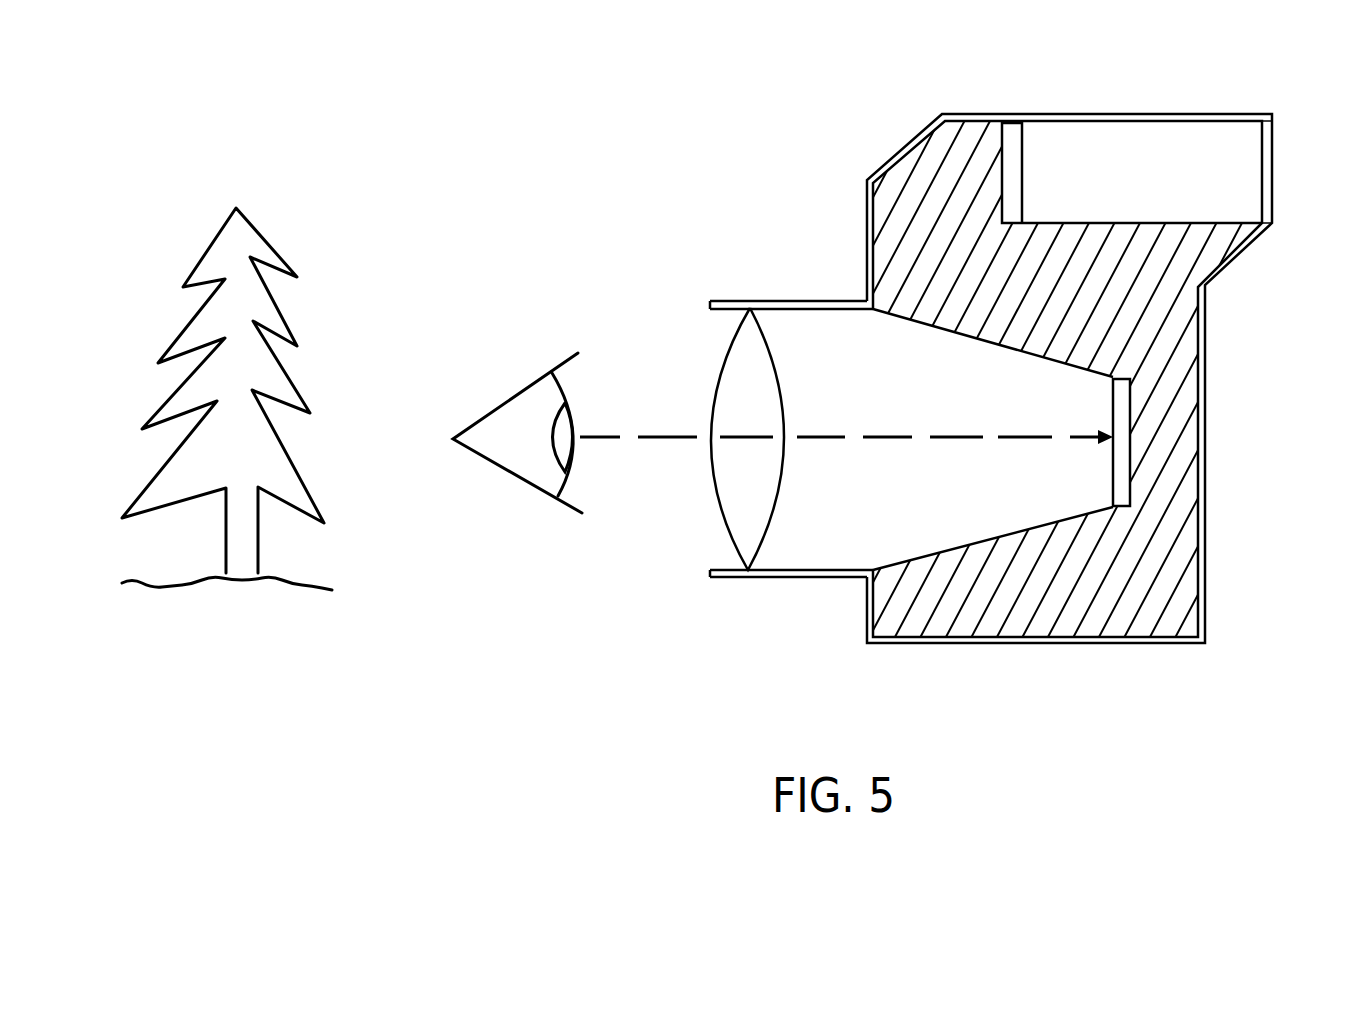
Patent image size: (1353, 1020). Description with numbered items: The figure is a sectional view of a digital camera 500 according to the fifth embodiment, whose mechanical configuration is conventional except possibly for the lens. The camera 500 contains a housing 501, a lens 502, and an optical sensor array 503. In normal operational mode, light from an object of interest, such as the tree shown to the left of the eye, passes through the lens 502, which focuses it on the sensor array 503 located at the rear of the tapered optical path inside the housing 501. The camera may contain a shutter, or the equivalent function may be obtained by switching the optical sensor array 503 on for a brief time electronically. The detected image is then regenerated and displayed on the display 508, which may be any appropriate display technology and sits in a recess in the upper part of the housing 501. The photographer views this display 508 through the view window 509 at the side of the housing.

The camera 500 is at (758, 131).
The housing 501 is at (1205, 601).
The lens 502 is at (722, 517).
The optical sensor array 503 is at (1130, 454).
The display 508 is at (1023, 134).
The view window 509 is at (1270, 147).